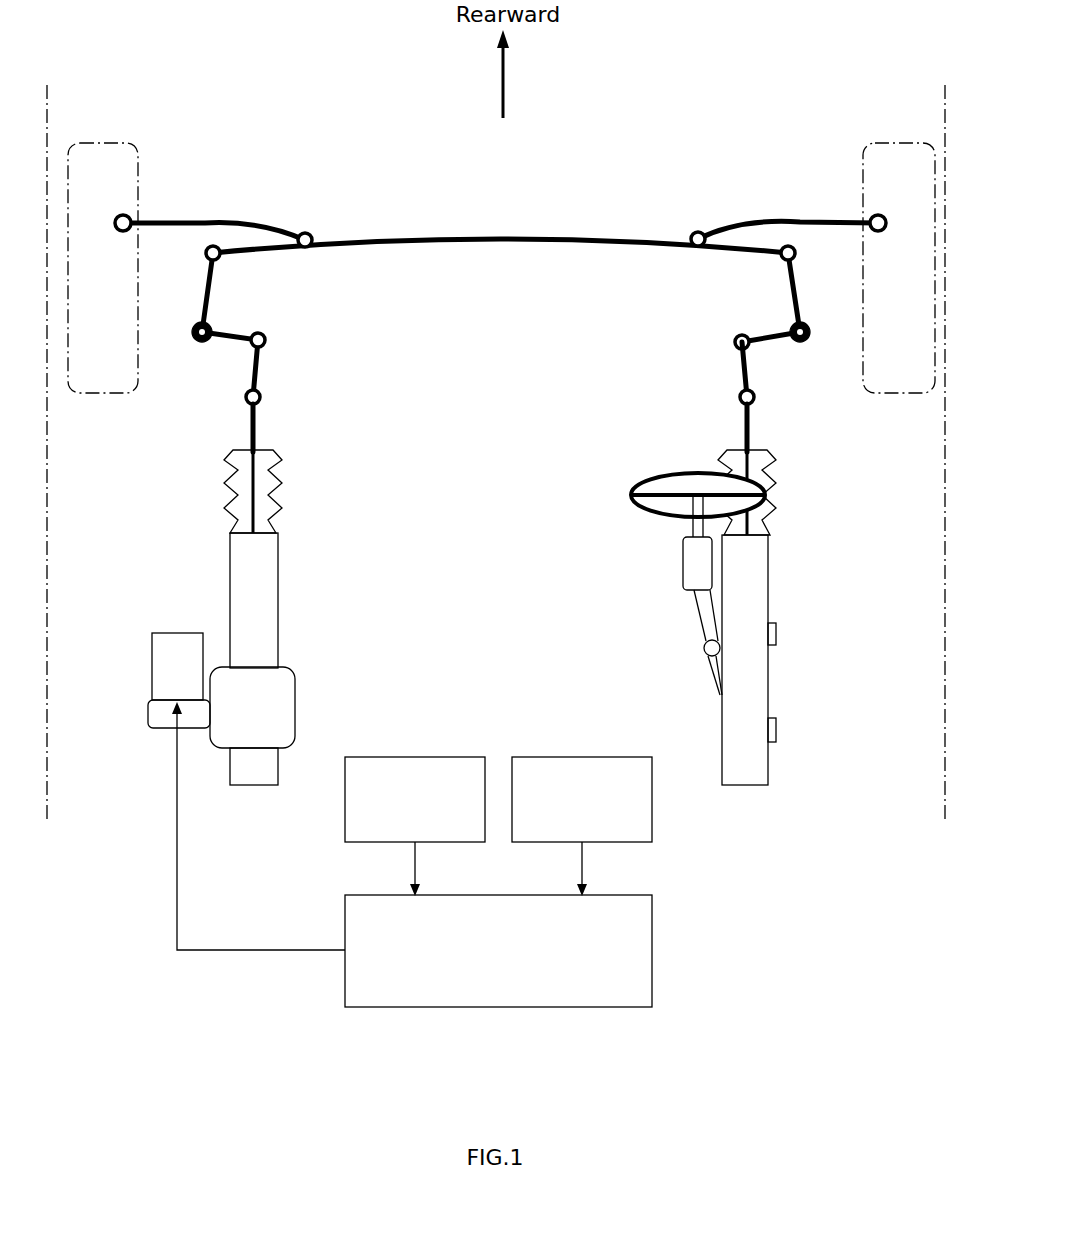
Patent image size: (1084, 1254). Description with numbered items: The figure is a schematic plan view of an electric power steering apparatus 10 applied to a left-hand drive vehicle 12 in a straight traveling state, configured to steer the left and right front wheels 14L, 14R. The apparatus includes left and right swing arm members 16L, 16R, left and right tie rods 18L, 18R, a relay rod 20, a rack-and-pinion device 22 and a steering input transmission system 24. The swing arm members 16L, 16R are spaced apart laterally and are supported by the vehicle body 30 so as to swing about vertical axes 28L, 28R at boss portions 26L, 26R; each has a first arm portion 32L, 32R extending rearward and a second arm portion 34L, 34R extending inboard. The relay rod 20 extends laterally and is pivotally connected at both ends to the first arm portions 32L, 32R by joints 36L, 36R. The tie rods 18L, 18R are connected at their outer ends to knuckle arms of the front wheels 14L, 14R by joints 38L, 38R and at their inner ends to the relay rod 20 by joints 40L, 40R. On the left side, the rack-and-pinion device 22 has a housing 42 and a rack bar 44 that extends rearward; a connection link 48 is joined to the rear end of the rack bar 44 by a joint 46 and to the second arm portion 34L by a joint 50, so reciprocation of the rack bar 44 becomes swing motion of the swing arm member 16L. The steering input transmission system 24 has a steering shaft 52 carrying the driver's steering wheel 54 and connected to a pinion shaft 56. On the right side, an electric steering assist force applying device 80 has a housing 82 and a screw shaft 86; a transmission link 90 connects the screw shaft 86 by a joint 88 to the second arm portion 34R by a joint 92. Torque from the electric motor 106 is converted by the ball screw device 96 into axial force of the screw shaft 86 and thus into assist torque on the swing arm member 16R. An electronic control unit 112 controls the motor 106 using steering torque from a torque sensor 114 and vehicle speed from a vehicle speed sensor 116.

The electric power steering apparatus 10 is at (386, 166).
The vehicle 12 is at (716, 97).
The right front wheel 14R is at (100, 393).
The left front wheel 14L is at (897, 393).
The right swing arm member 16R is at (220, 304).
The left swing arm member 16L is at (748, 311).
The right tie rod 18R is at (174, 216).
The left tie rod 18L is at (830, 216).
The relay rod 20 is at (488, 238).
The rack-and-pinion device 22 is at (791, 591).
The steering input transmission system 24 is at (670, 612).
The right boss portion 26R is at (192, 345).
The left boss portion 26L is at (808, 343).
The right vertical axis 28R is at (198, 322).
The left vertical axis 28L is at (805, 320).
The vehicle body 30 is at (943, 545).
The right first arm portion 32R is at (205, 285).
The left first arm portion 32L is at (797, 275).
The right second arm portion 34R is at (233, 335).
The left second arm portion 34L is at (770, 350).
The joint 36R is at (216, 245).
The joint 36L is at (785, 245).
The joint 38R is at (120, 213).
The joint 38L is at (880, 213).
The joint 40R is at (305, 232).
The joint 40L is at (698, 231).
The housing 42 is at (768, 760).
The rack bar 44 is at (752, 432).
The joint 46 is at (738, 397).
The connection link 48 is at (743, 365).
The joint 50 is at (733, 342).
The steering shaft 52 is at (688, 565).
The steering wheel 54 is at (632, 495).
The pinion shaft 56 is at (705, 660).
The steering assist force applying device 80 is at (136, 655).
The housing 82 is at (278, 583).
The screw shaft 86 is at (232, 490).
The joint 88 is at (262, 396).
The transmission link 90 is at (253, 370).
The joint 92 is at (268, 339).
The ball screw device 96 is at (290, 705).
The electric motor 106 is at (175, 640).
The electronic control unit 112 is at (652, 952).
The torque sensor 114 is at (412, 757).
The vehicle speed sensor 116 is at (585, 757).